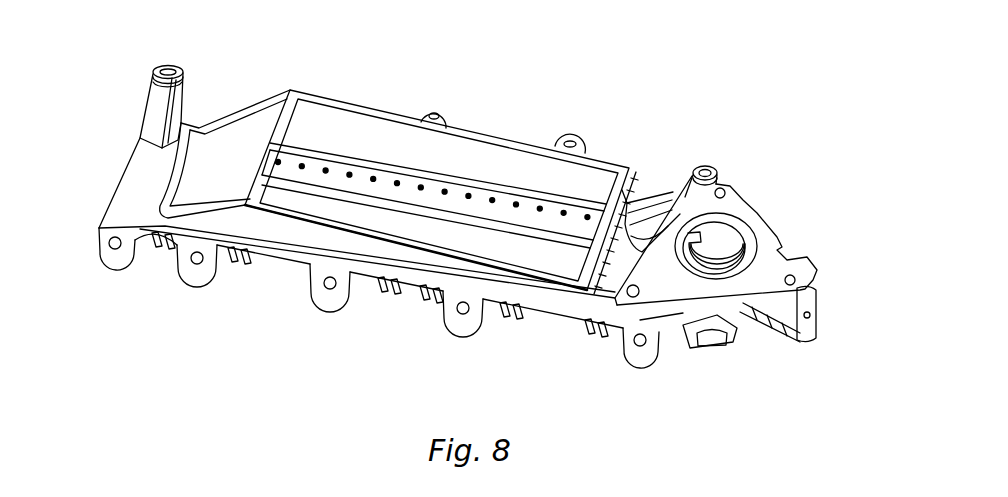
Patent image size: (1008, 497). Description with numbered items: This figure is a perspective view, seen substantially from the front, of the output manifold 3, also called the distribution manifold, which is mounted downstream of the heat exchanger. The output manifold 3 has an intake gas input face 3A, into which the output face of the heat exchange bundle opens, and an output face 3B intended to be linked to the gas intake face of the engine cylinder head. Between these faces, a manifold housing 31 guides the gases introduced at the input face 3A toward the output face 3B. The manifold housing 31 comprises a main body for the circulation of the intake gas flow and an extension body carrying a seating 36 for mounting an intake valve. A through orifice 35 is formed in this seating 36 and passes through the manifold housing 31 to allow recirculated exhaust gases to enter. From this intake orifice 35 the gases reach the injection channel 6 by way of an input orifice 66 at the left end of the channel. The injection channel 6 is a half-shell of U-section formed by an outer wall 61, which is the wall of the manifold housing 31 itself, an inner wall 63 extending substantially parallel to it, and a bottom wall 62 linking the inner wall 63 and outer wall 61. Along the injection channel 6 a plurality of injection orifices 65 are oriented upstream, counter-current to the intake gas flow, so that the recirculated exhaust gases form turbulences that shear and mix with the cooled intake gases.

The output manifold 3 is at (250, 79).
The input face 3A is at (460, 160).
The output face 3B is at (317, 309).
The injection channel 6 is at (547, 243).
The manifold housing 31 is at (298, 233).
The intake orifice 35 is at (725, 228).
The seating 36 is at (653, 282).
The outer wall 61 is at (498, 187).
The bottom wall 62 is at (573, 222).
The inner wall 63 is at (367, 198).
The injection orifices 65 is at (466, 198).
The input orifice 66 is at (690, 242).